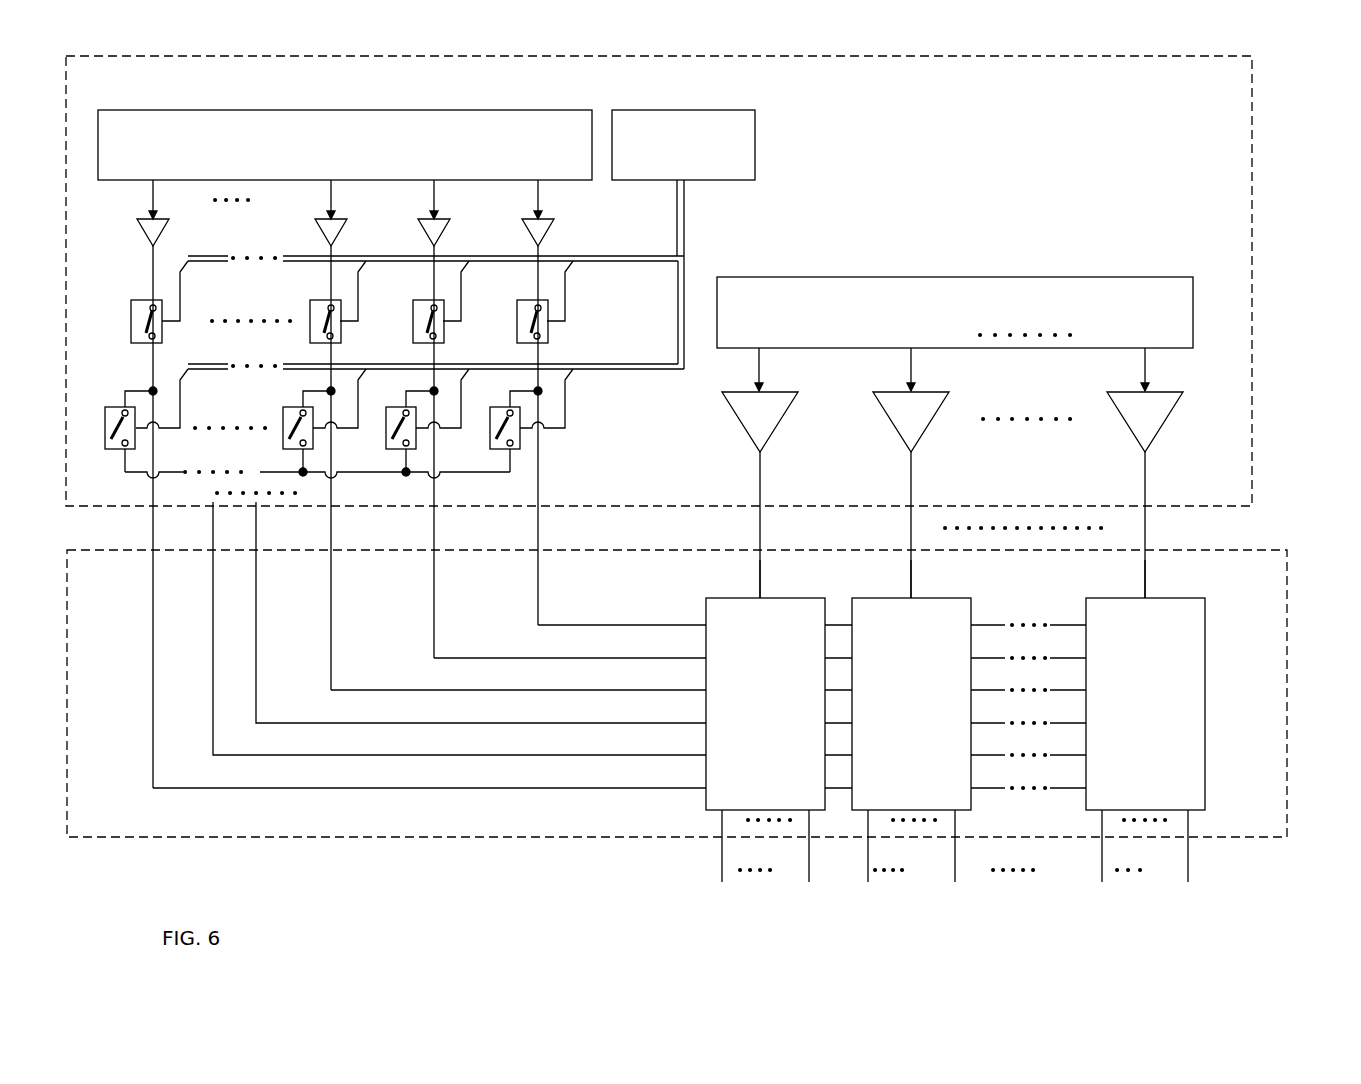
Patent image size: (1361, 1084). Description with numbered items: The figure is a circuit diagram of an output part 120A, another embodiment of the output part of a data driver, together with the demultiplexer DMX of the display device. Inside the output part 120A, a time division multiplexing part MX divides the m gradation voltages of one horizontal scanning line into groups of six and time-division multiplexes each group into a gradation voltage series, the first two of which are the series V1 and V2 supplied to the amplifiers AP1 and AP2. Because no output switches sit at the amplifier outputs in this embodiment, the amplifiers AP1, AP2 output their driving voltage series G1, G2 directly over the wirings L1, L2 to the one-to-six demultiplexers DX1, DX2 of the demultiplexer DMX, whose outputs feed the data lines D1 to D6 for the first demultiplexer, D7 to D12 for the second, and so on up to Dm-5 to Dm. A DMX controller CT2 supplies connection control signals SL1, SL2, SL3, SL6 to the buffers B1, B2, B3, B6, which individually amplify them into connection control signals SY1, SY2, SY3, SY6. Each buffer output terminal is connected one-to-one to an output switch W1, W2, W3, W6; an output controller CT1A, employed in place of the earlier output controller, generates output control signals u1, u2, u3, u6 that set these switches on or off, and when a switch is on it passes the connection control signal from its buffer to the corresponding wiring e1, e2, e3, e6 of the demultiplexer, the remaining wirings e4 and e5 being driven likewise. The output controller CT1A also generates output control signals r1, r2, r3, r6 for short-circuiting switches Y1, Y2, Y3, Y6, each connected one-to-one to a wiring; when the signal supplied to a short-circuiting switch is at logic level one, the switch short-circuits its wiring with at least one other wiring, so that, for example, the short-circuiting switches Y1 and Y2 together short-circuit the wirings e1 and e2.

The output part 120A is at (1252, 186).
The demultiplexer DMX is at (1245, 550).
The DMX controller CT2 is at (570, 110).
The output controller CT1A is at (728, 110).
The time division multiplexing part MX is at (1135, 277).
The buffer B6 is at (143, 218).
The buffer B3 is at (321, 218).
The buffer B2 is at (424, 218).
The buffer B1 is at (528, 218).
The connection control signal SL6 is at (173, 199).
The connection control signal SL3 is at (351, 199).
The connection control signal SL2 is at (454, 199).
The connection control signal SL1 is at (558, 199).
The output switch W6 is at (134, 300).
The output switch W3 is at (319, 300).
The output switch W2 is at (422, 300).
The output switch W1 is at (526, 300).
The output control signal u6 is at (187, 291).
The output control signal u3 is at (365, 291).
The output control signal u2 is at (468, 291).
The output control signal u1 is at (572, 291).
The output control signal r6 is at (172, 398).
The output control signal r3 is at (349, 398).
The output control signal r2 is at (452, 398).
The output control signal r1 is at (556, 398).
The short-circuiting switch Y6 is at (105, 440).
The short-circuiting switch Y3 is at (283, 437).
The short-circuiting switch Y2 is at (386, 437).
The short-circuiting switch Y1 is at (490, 437).
The connection control signal SY6 is at (174, 517).
The connection control signal SY3 is at (352, 468).
The connection control signal SY2 is at (455, 452).
The connection control signal SY1 is at (559, 435).
The gradation voltage series V1 is at (759, 357).
The gradation voltage series V2 is at (910, 357).
The amplifier AP1 is at (777, 430).
The amplifier AP2 is at (928, 430).
The driving voltage series G1 is at (747, 525).
The driving voltage series G2 is at (896, 525).
The wiring L1 is at (759, 582).
The wiring L2 is at (910, 582).
The 1 to 6 demultiplexer DX1 is at (786, 598).
The 1 to 6 demultiplexer DX2 is at (932, 598).
The wiring e1 is at (613, 625).
The wiring e2 is at (613, 658).
The wiring e3 is at (613, 690).
The wiring e4 is at (613, 723).
The wiring e5 is at (613, 755).
The wiring e6 is at (613, 788).
The data line D1 is at (722, 846).
The data line D6 is at (809, 846).
The data line D7 is at (868, 846).
The data line D12 is at (955, 846).
The data line Dm-5 is at (1102, 846).
The data line Dm is at (1188, 846).